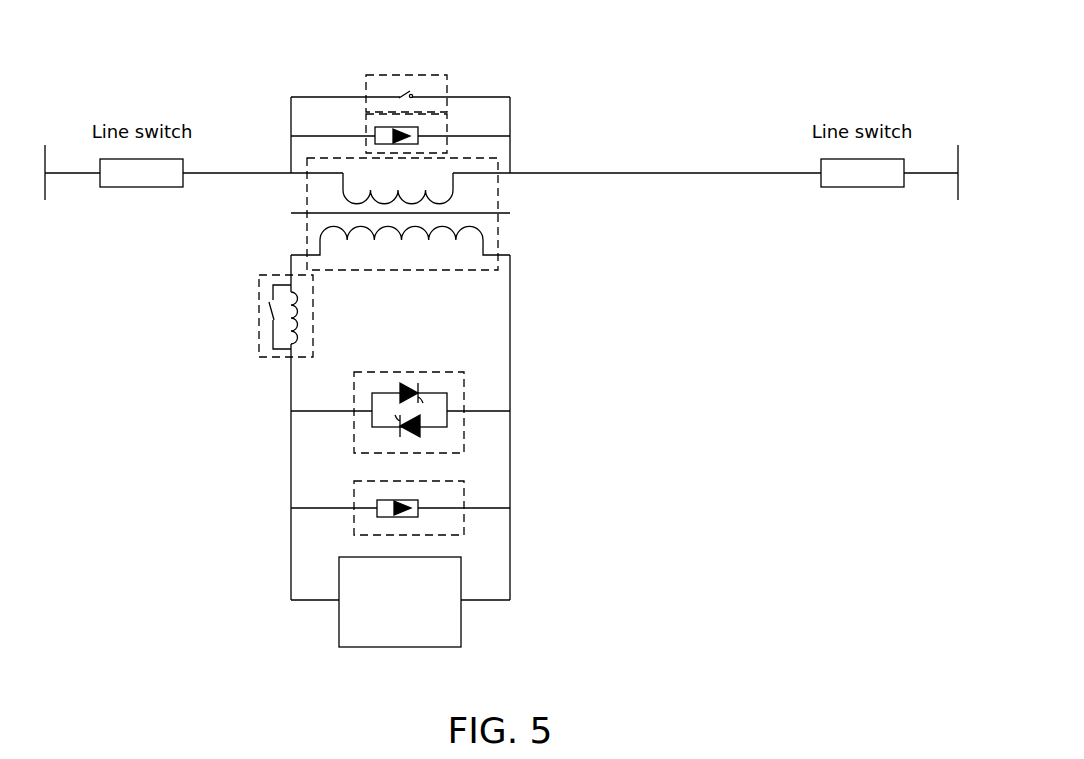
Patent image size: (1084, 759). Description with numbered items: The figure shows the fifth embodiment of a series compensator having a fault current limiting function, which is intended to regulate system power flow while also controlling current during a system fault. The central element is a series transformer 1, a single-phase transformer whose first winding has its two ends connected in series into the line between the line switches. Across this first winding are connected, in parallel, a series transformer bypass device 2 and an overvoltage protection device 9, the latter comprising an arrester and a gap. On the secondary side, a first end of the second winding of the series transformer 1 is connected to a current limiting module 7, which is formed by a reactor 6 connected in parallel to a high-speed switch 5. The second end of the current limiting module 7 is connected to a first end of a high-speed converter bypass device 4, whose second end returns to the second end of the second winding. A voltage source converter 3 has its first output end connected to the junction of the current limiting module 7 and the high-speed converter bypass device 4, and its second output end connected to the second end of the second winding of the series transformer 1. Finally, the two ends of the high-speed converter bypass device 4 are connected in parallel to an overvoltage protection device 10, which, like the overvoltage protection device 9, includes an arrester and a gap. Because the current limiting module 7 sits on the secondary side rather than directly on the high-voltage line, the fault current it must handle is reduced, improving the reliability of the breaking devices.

The series transformer 1 is at (297, 233).
The series transformer bypass device 2 is at (432, 65).
The voltage source converter 3 is at (336, 633).
The high-speed converter bypass device 4 is at (473, 420).
The high-speed switch 5 is at (270, 311).
The reactor 6 is at (300, 310).
The current limiting module 7 is at (280, 337).
The overvoltage protection device 9 is at (452, 127).
The overvoltage protection device 10 is at (345, 524).